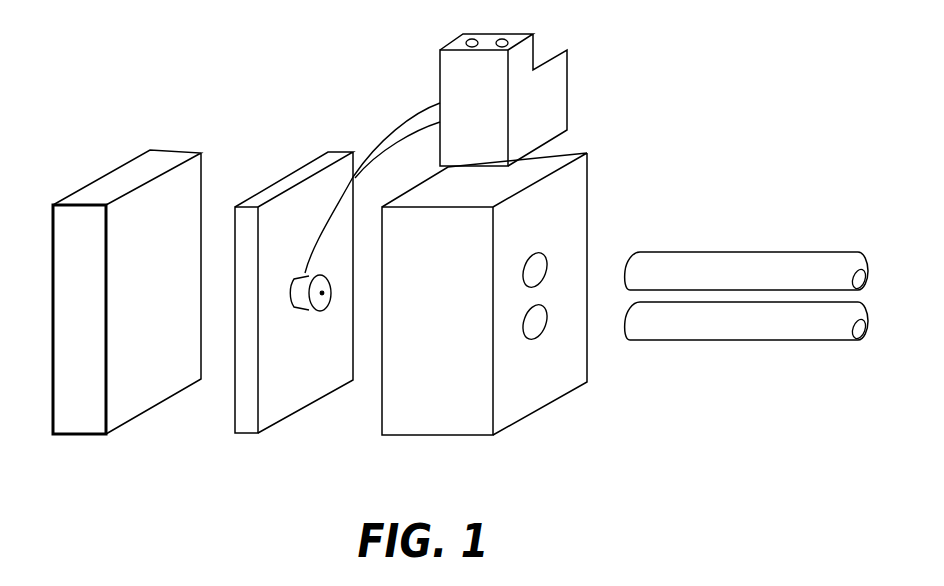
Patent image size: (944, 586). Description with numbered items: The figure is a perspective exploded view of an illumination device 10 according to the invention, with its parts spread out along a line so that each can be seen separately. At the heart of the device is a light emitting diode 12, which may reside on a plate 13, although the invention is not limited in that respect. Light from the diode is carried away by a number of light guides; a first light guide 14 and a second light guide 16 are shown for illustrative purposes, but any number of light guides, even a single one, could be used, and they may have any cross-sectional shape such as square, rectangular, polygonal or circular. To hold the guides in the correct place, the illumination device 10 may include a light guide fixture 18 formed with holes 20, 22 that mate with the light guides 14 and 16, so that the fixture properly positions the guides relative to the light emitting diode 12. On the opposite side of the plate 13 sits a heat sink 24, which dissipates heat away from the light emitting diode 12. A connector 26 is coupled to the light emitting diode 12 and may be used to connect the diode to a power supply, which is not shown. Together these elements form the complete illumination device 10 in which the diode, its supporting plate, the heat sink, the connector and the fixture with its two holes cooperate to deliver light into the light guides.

The illumination device 10 is at (652, 147).
The light emitting diode 12 is at (297, 313).
The plate 13 is at (297, 177).
The first light guide 14 is at (762, 251).
The second light guide 16 is at (757, 338).
The light guide fixture 18 is at (512, 427).
The hole 20 is at (542, 263).
The hole 22 is at (542, 327).
The heat sink 24 is at (82, 420).
The connector 26 is at (547, 78).